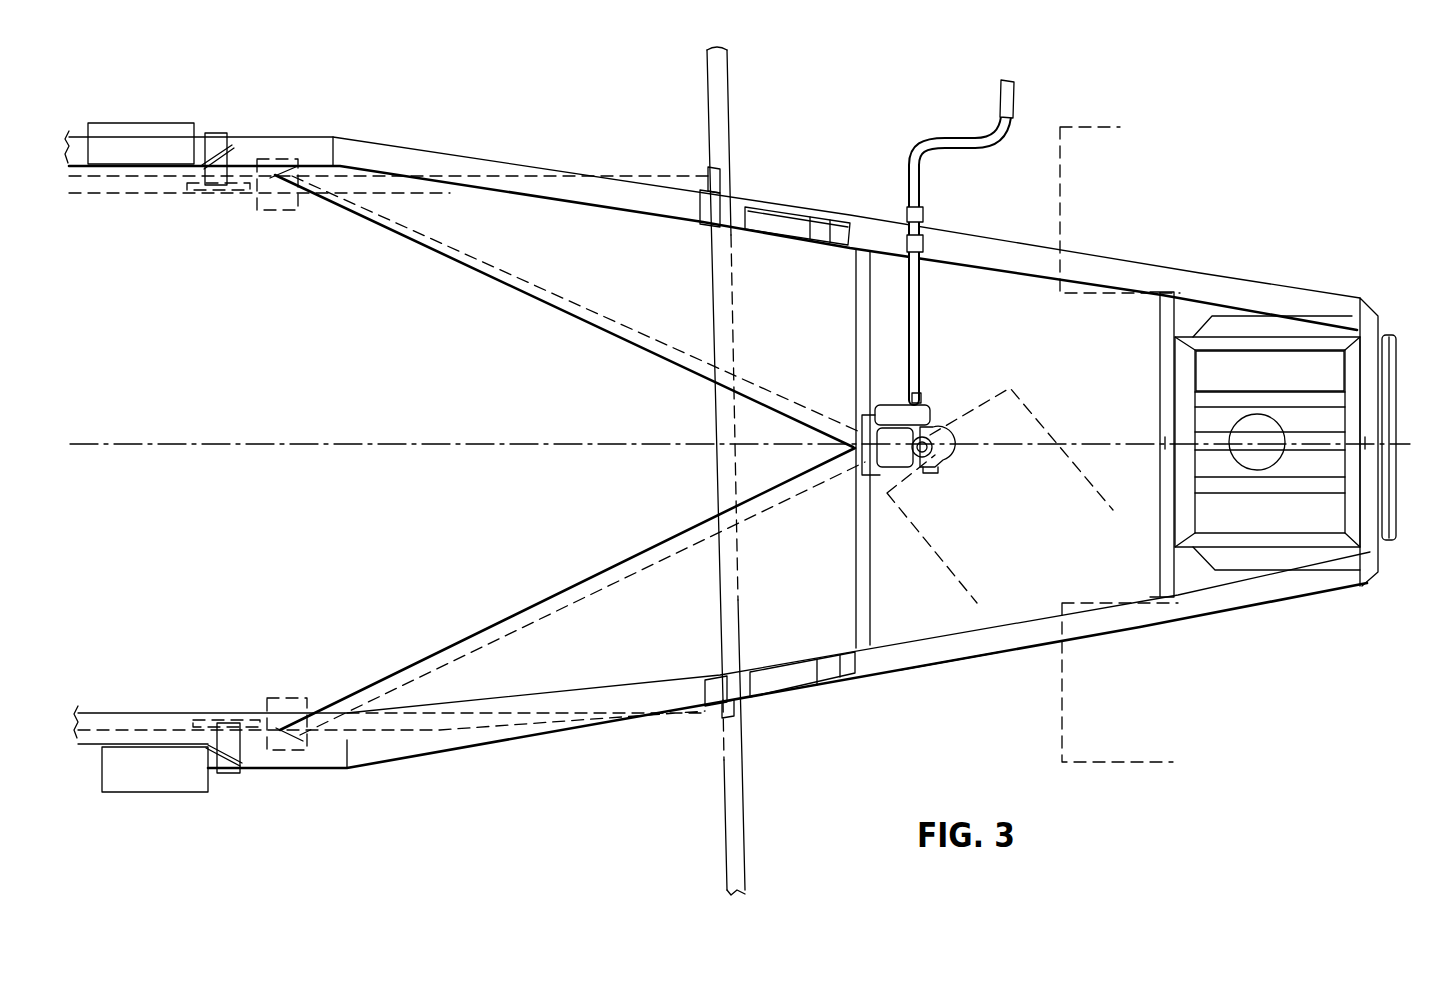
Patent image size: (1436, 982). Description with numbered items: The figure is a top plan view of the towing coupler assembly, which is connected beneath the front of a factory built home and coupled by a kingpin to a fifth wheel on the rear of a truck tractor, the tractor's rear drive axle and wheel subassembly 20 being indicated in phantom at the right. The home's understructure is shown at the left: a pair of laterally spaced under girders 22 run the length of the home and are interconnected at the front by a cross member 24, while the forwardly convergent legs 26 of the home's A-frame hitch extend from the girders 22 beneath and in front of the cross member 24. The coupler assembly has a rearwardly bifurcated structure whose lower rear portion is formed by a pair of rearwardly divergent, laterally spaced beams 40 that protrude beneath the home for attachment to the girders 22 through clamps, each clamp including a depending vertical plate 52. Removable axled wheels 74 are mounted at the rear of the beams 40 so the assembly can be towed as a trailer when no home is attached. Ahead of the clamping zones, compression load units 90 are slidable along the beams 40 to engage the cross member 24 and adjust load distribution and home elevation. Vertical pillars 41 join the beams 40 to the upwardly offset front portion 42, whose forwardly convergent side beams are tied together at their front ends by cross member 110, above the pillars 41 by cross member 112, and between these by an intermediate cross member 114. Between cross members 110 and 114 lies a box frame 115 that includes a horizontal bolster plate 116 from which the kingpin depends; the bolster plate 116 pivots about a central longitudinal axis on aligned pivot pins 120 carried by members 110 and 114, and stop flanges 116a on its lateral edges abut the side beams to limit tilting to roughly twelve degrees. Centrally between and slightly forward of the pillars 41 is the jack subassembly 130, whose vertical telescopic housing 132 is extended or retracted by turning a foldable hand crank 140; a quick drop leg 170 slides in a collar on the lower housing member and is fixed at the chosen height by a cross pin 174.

The rear drive axle and wheel subassembly 20 is at (1129, 147).
The under girders 22 is at (392, 180).
The cross member 24 is at (722, 134).
The forwardly convergent legs 26 is at (574, 302).
The beams 40 is at (490, 740).
The vertical pillars 41 is at (790, 207).
The front portion 42 is at (962, 655).
The vertical plate 52 is at (237, 200).
The axled wheels 74 is at (184, 129).
The compression load units 90 is at (729, 189).
The cross member 110 is at (1369, 318).
The cross member 112 is at (858, 246).
The intermediate cross member 114 is at (1165, 310).
The box frame 115 is at (1240, 342).
The bolster plate 116 is at (1290, 380).
The stop flanges 116a is at (1283, 323).
The pivot pins 120 is at (1160, 443).
The jack subassembly 130 is at (936, 402).
The telescopic housing 132 is at (893, 468).
The hand crank 140 is at (922, 137).
The quick drop leg 170 is at (932, 436).
The cross pin 174 is at (932, 470).